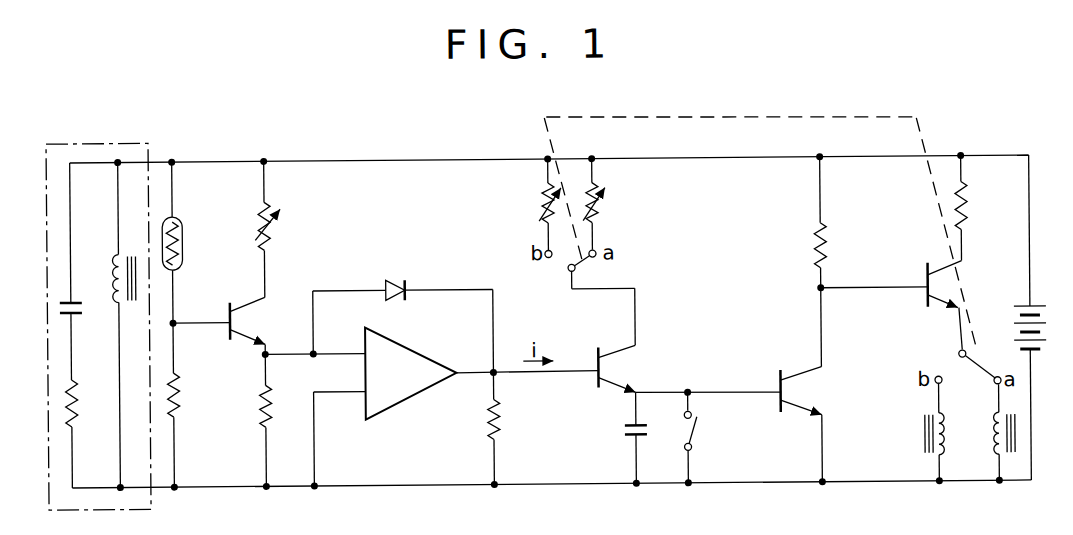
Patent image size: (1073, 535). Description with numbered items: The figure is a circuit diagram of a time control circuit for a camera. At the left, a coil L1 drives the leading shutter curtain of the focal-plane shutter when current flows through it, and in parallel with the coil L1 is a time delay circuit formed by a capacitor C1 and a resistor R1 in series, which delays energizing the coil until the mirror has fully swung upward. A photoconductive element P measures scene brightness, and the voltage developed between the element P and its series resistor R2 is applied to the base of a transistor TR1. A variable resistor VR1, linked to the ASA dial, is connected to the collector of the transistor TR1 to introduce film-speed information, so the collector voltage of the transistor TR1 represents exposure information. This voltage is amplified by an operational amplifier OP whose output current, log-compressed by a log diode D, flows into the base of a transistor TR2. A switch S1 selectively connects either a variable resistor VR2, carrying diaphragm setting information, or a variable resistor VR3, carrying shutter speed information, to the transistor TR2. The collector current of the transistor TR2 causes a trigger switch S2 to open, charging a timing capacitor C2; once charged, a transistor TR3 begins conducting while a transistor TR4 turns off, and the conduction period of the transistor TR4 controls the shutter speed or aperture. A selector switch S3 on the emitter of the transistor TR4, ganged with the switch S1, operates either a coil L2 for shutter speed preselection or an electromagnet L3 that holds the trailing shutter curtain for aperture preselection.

The coil L1 is at (111, 272).
The capacitor C1 is at (84, 306).
The resistor R1 is at (77, 406).
The photoconductive element P is at (185, 243).
The resistor R2 is at (180, 398).
The transistor TR1 is at (227, 315).
The variable resistor VR1 is at (281, 233).
The log diode D is at (395, 279).
The operational amplifier OP is at (411, 373).
The variable resistor VR2 is at (539, 205).
The variable resistor VR3 is at (601, 206).
The switch S1 is at (566, 265).
The transistor TR2 is at (594, 353).
The timing capacitor C2 is at (626, 431).
The trigger switch S2 is at (700, 429).
The transistor TR3 is at (774, 385).
The transistor TR4 is at (917, 275).
The selector switch S3 is at (974, 370).
The electromagnet L3 is at (920, 435).
The coil L2 is at (992, 434).